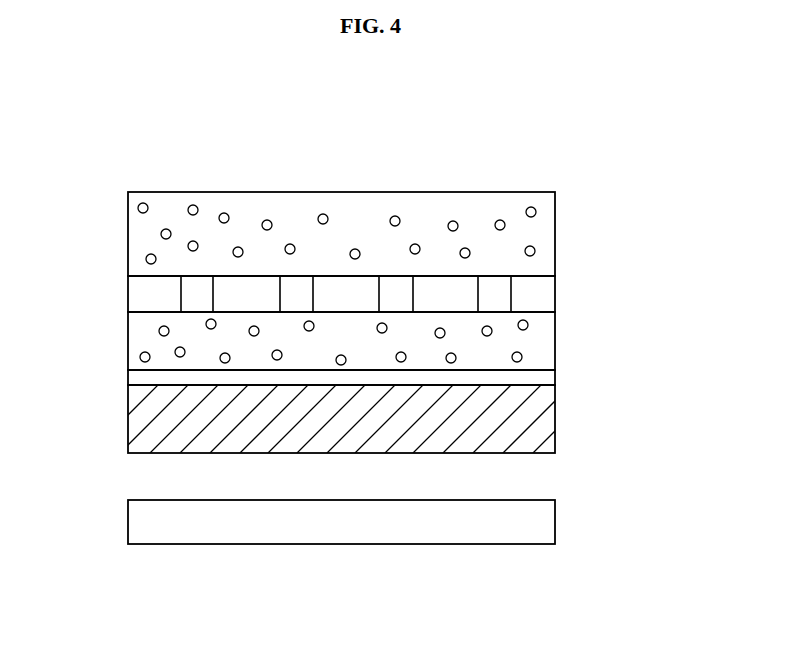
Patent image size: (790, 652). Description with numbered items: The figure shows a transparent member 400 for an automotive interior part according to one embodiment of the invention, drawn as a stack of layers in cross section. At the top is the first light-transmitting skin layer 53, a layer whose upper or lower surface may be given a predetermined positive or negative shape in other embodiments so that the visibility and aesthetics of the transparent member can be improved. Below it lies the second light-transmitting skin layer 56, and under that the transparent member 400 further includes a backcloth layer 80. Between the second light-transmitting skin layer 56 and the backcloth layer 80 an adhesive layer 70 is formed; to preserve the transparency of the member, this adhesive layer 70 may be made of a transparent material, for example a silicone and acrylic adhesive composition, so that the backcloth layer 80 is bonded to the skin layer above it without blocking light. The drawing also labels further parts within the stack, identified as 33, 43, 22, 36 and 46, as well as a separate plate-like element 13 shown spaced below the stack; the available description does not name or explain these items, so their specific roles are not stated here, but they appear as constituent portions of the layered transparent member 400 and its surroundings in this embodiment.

The transparent member 400 is at (117, 82).
The first light-transmitting skin layer 53 is at (573, 146).
The second matrix 33 is at (485, 208).
The second scattering particles 43 is at (504, 221).
The color filter layer / light emitting element layer 22 is at (542, 292).
The second light-transmitting skin layer 56 is at (628, 312).
The first matrix 36 is at (543, 336).
The first scattering particles 46 is at (528, 358).
The adhesive layer 70 is at (543, 378).
The backcloth layer 80 is at (540, 424).
The lower substrate 13 is at (532, 521).